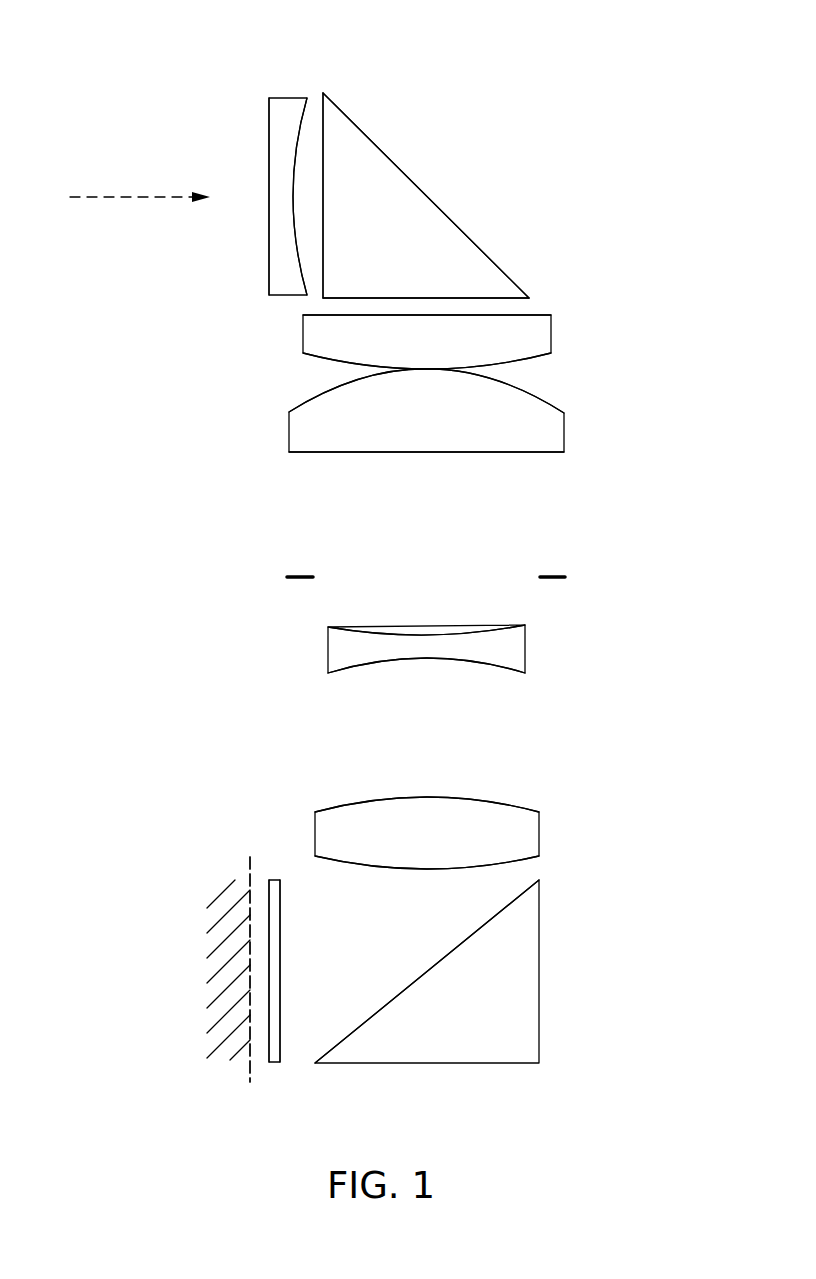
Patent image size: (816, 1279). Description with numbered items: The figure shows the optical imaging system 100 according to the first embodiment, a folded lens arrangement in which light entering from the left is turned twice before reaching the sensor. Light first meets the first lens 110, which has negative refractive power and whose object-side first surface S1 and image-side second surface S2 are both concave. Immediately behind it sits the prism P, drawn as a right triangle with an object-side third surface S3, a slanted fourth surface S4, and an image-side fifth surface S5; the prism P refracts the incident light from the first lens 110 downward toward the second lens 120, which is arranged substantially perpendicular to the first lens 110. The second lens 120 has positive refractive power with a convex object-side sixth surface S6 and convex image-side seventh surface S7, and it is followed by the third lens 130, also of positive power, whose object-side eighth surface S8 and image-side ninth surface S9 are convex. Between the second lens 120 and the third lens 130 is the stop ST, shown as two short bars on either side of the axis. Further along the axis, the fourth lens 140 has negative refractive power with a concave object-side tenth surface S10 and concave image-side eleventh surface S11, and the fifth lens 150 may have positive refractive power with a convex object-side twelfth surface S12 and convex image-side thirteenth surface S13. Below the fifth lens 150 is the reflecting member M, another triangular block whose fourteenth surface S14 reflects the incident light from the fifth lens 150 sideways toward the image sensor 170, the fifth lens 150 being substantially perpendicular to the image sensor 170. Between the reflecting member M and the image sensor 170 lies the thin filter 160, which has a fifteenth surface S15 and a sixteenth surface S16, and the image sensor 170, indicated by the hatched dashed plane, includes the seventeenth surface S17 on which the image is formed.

The optical imaging system 100 is at (608, 262).
The first lens 110 is at (297, 108).
The second lens 120 is at (534, 334).
The third lens 130 is at (533, 433).
The fourth lens 140 is at (510, 645).
The fifth lens 150 is at (510, 836).
The filter 160 is at (275, 948).
The image sensor 170 is at (227, 968).
The prism P is at (438, 206).
The reflecting member M is at (433, 967).
The stop ST is at (552, 577).
The first surface S1 is at (268, 155).
The second surface S2 is at (302, 146).
The third surface S3 is at (324, 192).
The fourth surface S4 is at (412, 178).
The fifth surface S5 is at (458, 306).
The sixth surface S6 is at (312, 316).
The seventh surface S7 is at (330, 357).
The eighth surface S8 is at (303, 409).
The ninth surface S9 is at (301, 453).
The tenth surface S10 is at (354, 632).
The eleventh surface S11 is at (356, 664).
The twelfth surface S12 is at (360, 802).
The thirteenth surface S13 is at (458, 870).
The fourteenth surface S14 is at (413, 983).
The fifteenth surface S15 is at (281, 1020).
The sixteenth surface S16 is at (268, 1040).
The seventeenth surface S17 is at (252, 900).